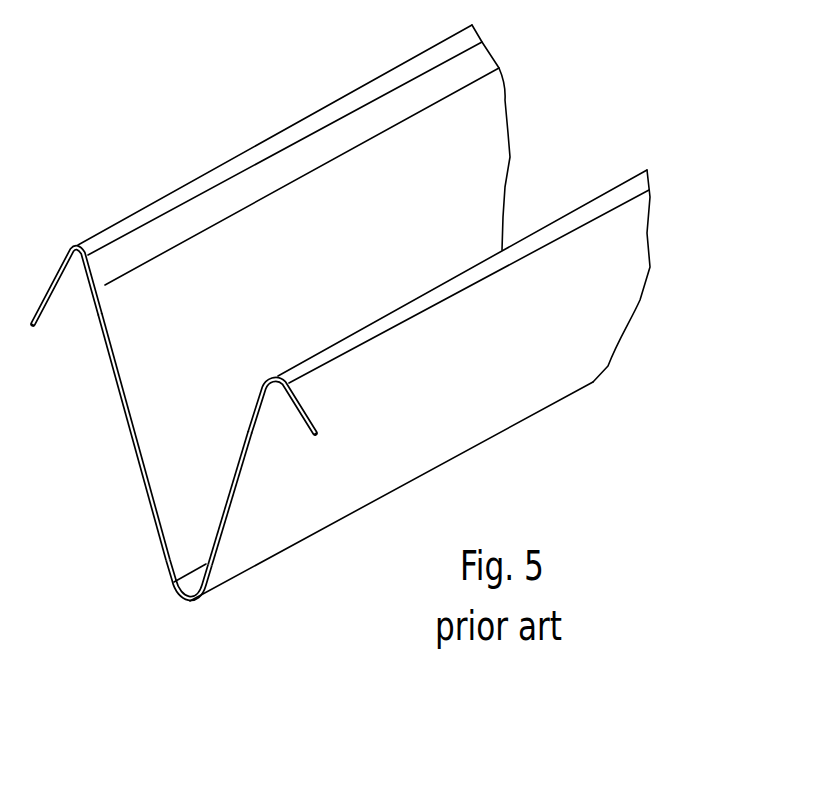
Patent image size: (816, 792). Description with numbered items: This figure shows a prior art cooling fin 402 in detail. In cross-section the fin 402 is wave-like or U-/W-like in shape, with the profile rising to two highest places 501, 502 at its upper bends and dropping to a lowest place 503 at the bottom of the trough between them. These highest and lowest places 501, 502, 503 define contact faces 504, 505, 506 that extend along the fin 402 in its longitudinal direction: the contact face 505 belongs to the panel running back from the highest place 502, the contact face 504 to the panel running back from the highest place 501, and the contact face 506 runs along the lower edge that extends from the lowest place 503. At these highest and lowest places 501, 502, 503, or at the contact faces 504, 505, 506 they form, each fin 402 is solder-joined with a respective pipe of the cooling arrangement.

The fin 402 is at (160, 458).
The highest place 501 is at (282, 376).
The highest place 502 is at (81, 247).
The lowest place 503 is at (185, 606).
The contact face 504 is at (456, 277).
The contact face 505 is at (263, 142).
The contact face 506 is at (495, 437).